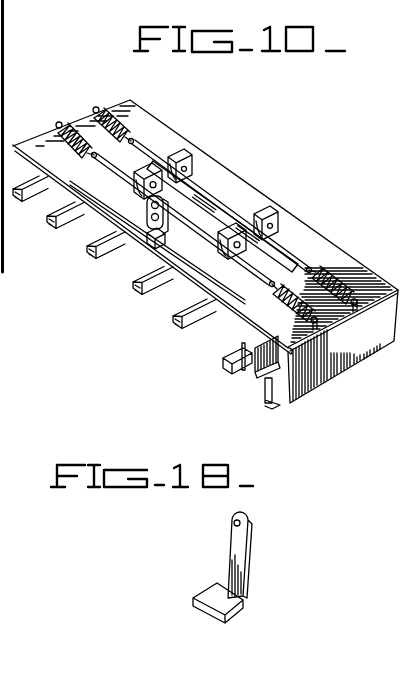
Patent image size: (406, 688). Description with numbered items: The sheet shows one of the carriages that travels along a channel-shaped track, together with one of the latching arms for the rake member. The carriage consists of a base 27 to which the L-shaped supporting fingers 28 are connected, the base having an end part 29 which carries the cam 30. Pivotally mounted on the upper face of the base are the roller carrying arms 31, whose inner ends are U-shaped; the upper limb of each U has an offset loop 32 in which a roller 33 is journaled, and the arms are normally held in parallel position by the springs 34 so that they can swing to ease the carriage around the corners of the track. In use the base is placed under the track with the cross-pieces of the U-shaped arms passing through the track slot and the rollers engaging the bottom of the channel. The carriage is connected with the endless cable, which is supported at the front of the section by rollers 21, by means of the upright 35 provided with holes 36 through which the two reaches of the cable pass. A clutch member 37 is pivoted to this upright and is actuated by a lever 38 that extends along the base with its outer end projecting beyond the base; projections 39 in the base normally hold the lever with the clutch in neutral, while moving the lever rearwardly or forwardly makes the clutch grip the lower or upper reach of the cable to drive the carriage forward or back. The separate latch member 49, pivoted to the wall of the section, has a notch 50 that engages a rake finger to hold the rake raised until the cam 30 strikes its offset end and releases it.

In FIG. 10, the rollers 21 is at (4, 433).
In FIG. 10, the base 27 is at (73, 180).
In FIG. 10, the L-shaped supporting fingers 28 is at (147, 289).
In FIG. 10, the end part 29 is at (331, 363).
In FIG. 10, the cam 30 is at (266, 385).
In FIG. 10, the roller carrying arms 31 is at (143, 157).
In FIG. 10, the offset loop 32 is at (181, 144).
In FIG. 10, the roller 33 is at (195, 158).
In FIG. 10, the springs 34 is at (93, 116).
In FIG. 10, the upright 35 is at (141, 201).
In FIG. 10, the holes 36 is at (148, 229).
In FIG. 10, the clutch member 37 is at (196, 183).
In FIG. 10, the lever 38 is at (238, 343).
In FIG. 10, the projections 39 is at (236, 342).
In FIG. 18, the latch member 49 is at (227, 541).
In FIG. 18, the notch 50 is at (243, 598).